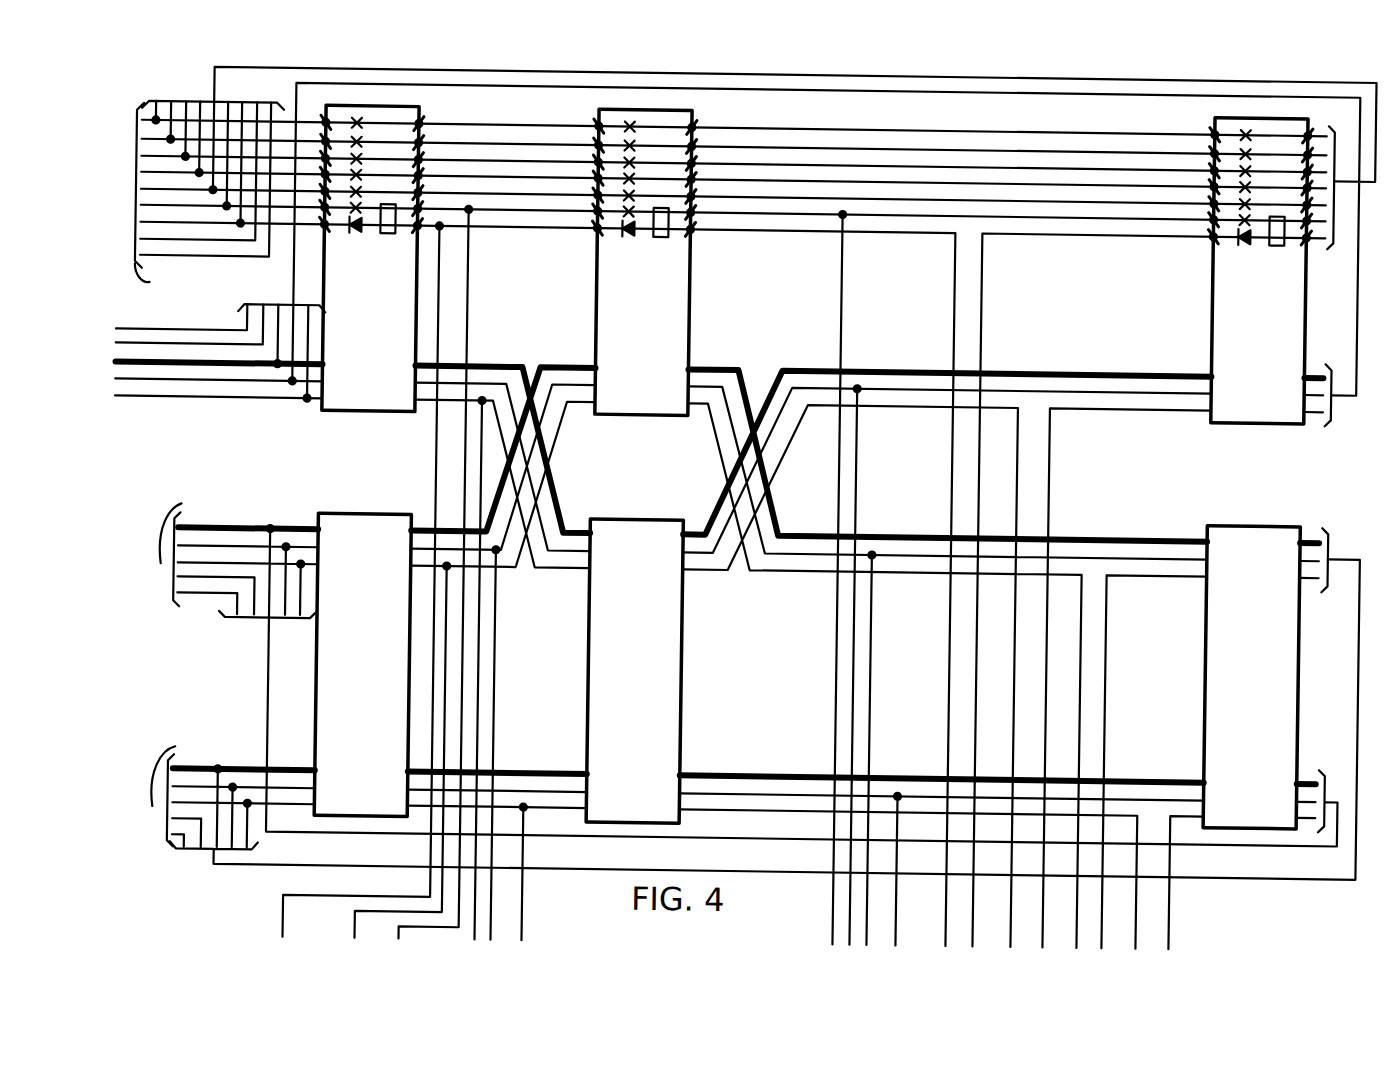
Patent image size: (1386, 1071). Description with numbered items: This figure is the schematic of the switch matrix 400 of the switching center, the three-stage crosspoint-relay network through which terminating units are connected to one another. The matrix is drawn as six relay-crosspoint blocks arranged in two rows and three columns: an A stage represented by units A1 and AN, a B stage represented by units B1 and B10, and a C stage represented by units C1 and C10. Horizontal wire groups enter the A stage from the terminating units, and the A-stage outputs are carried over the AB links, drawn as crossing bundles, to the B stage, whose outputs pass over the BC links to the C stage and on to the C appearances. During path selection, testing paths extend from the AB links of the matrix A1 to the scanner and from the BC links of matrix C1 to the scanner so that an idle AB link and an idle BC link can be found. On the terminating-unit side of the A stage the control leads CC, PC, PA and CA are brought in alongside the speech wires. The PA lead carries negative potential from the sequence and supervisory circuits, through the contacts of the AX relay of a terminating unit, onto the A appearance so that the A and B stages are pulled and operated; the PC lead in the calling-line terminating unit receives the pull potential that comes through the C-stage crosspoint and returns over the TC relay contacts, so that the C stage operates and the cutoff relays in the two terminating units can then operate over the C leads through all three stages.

The switch matrix 400 is at (742, 508).
The matrix A-stage unit A1 is at (415, 114).
The block B1 is at (689, 118).
The matrix C-stage unit C1 is at (1211, 117).
The block AN is at (357, 522).
The block B10 is at (635, 526).
The block C10 is at (1249, 522).
The CC line CC is at (120, 332).
The PC lead PC is at (174, 346).
The PA lead PA is at (124, 399).
The CA line CA is at (180, 398).